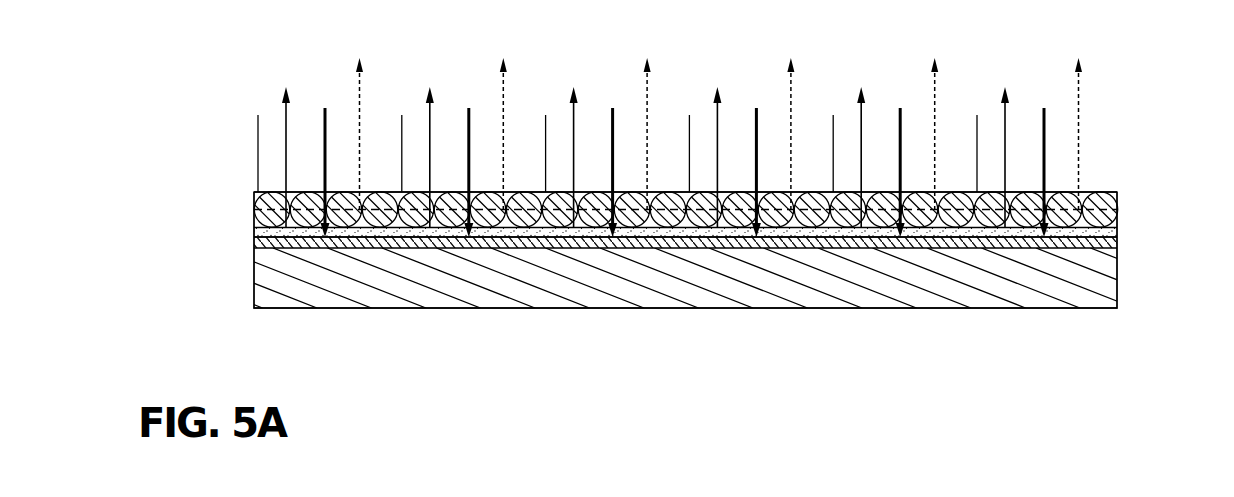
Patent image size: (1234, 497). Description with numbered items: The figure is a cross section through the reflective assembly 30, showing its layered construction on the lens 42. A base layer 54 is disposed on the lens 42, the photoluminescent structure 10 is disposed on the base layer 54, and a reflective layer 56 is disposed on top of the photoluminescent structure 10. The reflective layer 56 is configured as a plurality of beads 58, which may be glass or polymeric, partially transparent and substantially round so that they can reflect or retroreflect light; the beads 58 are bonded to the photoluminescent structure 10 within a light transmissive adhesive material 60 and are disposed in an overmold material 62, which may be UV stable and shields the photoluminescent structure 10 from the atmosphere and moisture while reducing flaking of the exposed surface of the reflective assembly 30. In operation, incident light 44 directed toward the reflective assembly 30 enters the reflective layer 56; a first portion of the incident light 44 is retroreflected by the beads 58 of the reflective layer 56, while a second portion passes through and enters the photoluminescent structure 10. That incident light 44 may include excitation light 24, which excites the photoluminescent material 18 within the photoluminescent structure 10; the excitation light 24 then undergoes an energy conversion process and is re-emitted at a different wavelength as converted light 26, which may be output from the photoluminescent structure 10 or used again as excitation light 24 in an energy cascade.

The photoluminescent structure 10 is at (253, 231).
The photoluminescent material 18 is at (253, 228).
The excitation light 24 is at (685, 127).
The converted light 26 is at (719, 118).
The reflective assembly 30 is at (1172, 187).
The lens 42 is at (1093, 298).
The incident light 44 is at (658, 129).
The base layer 54 is at (253, 240).
The reflective layer 56 is at (1125, 193).
The beads 58 is at (1095, 193).
The adhesive material 60 is at (1117, 229).
The overmold material 62 is at (1117, 190).